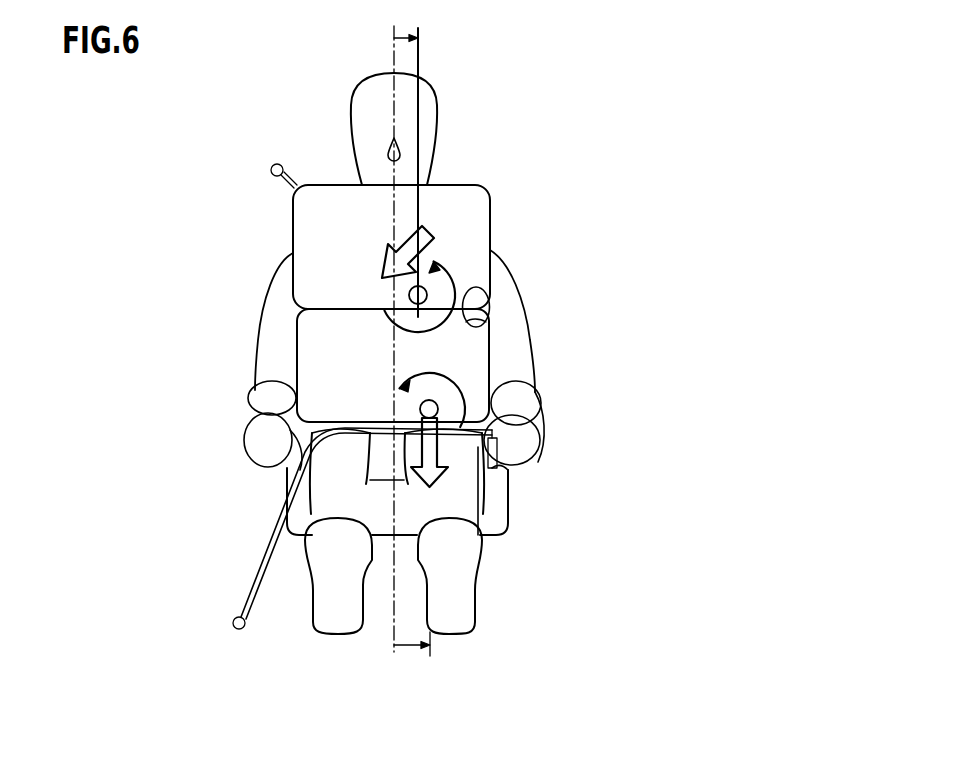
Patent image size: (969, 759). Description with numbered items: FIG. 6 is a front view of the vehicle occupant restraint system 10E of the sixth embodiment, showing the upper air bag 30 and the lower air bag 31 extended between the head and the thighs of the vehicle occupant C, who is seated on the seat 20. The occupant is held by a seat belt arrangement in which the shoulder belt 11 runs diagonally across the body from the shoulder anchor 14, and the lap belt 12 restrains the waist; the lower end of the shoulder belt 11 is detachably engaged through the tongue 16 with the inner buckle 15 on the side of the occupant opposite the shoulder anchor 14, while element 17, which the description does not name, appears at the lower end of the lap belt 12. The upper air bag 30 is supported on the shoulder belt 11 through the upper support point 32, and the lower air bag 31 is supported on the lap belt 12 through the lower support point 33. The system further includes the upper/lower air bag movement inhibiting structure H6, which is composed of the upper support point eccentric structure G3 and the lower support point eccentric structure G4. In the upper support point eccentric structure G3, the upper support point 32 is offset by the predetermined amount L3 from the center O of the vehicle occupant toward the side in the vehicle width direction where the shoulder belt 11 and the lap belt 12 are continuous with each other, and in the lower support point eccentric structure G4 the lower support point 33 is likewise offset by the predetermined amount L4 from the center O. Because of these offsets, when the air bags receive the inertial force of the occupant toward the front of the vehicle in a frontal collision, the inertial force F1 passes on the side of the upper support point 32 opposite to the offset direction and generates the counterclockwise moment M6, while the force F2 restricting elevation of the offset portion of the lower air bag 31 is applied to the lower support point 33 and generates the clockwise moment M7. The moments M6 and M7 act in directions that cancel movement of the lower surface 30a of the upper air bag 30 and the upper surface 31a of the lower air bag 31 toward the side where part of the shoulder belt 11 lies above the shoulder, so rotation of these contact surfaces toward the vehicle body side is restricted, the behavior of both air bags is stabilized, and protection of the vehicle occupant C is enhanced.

The vehicle occupant restraint system 10E is at (514, 98).
The vehicle occupant C is at (346, 89).
The center of the vehicle occupant O is at (394, 50).
The predetermined offset amount of upper support point L3 is at (418, 44).
The predetermined offset amount of lower support point L4 is at (403, 645).
The upper air bag 30 is at (351, 207).
The lower air bag 31 is at (318, 387).
The upper support point 32 is at (409, 295).
The lower support point 33 is at (420, 408).
The upper surface of lower air bag 31a is at (473, 288).
The lower surface of upper air bag 30a is at (473, 327).
The inertial force of the vehicle occupant F1 is at (432, 220).
The force restricting elevation of offset portion of lower air bag F2 is at (493, 437).
The counterclockwise moment M6 is at (457, 282).
The clockwise moment M7 is at (430, 360).
The upper support point eccentric structure G3 is at (512, 175).
The upper/lower air bag movement inhibiting structure H6 is at (512, 207).
The lower support point eccentric structure G4 is at (500, 368).
The shoulder anchor 14 is at (271, 170).
The shoulder belt 11 is at (293, 186).
The lap belt 12 is at (280, 441).
The tongue 16 is at (521, 447).
The inner buckle 15 is at (508, 465).
The lap belt anchor 17 is at (233, 623).
The seat 20 is at (522, 507).